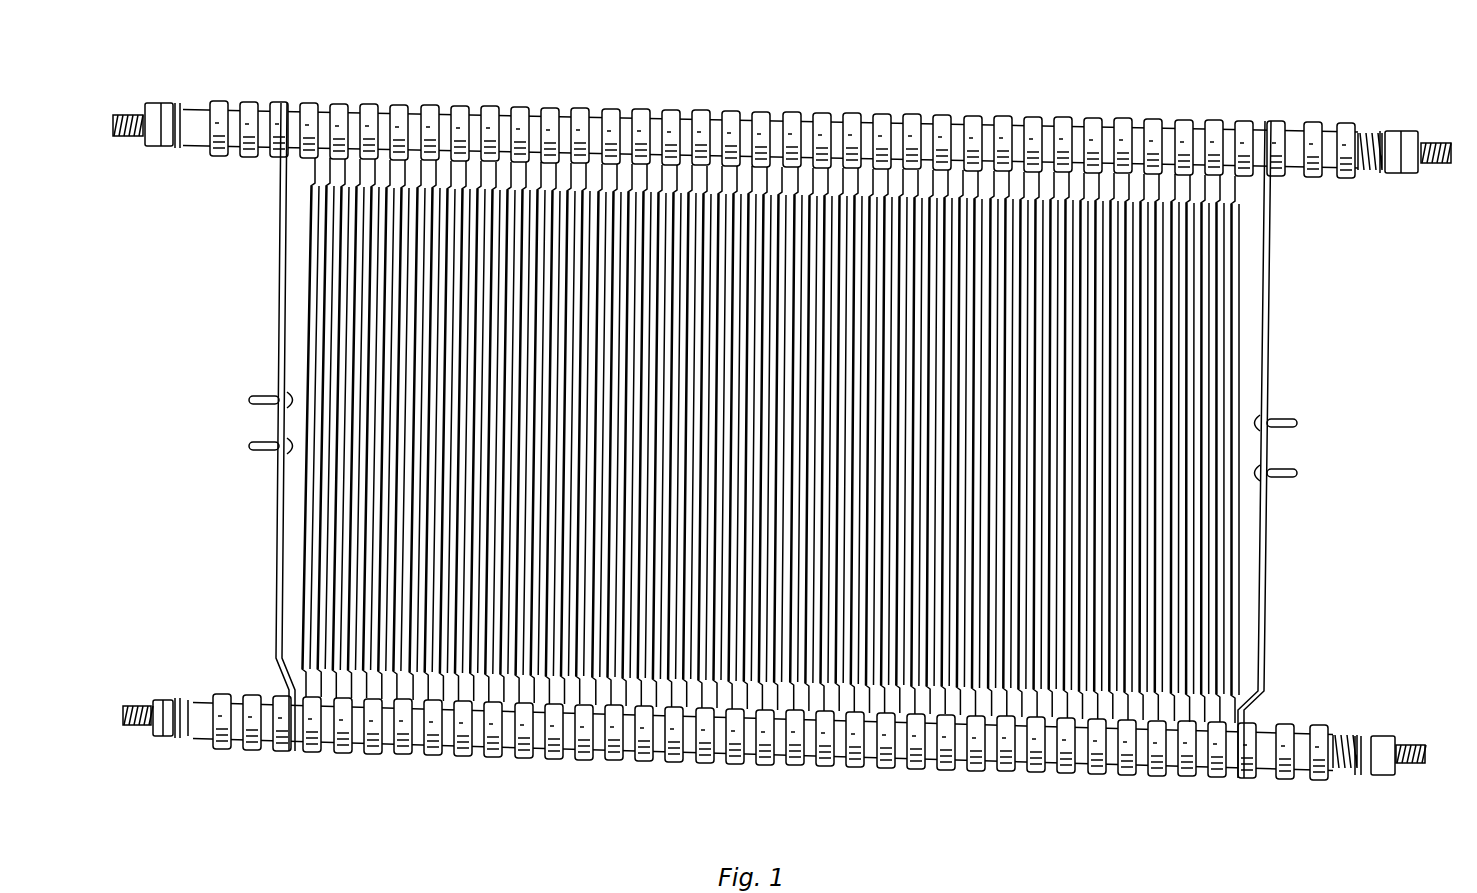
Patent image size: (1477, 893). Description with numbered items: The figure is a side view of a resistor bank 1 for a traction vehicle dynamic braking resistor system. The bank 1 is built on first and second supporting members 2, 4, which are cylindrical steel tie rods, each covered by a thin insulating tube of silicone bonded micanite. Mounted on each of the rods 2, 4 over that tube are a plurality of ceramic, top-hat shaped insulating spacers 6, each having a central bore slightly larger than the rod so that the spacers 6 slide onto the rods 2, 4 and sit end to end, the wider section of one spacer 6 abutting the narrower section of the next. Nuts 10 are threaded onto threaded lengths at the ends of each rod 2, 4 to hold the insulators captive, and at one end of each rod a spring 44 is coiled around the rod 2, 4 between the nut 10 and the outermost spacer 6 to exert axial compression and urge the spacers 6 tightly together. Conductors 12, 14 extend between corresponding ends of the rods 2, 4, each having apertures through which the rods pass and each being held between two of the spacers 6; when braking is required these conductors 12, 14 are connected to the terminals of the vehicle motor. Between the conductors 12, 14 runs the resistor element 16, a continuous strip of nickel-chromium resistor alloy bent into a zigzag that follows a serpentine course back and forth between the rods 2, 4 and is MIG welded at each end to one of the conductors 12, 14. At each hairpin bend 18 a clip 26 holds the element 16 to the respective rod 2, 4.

The resistor bank 1 is at (298, 767).
The first supporting member 2 is at (1403, 757).
The second supporting member 4 is at (1437, 135).
The insulating spacer 6 is at (741, 85).
The nut 10 is at (1403, 123).
The conductor 12 is at (1265, 320).
The conductor 14 is at (270, 545).
The resistor element 16 is at (1245, 578).
The hairpin bend 18 is at (952, 158).
The clip 26 is at (467, 100).
The spring 44 is at (1360, 160).